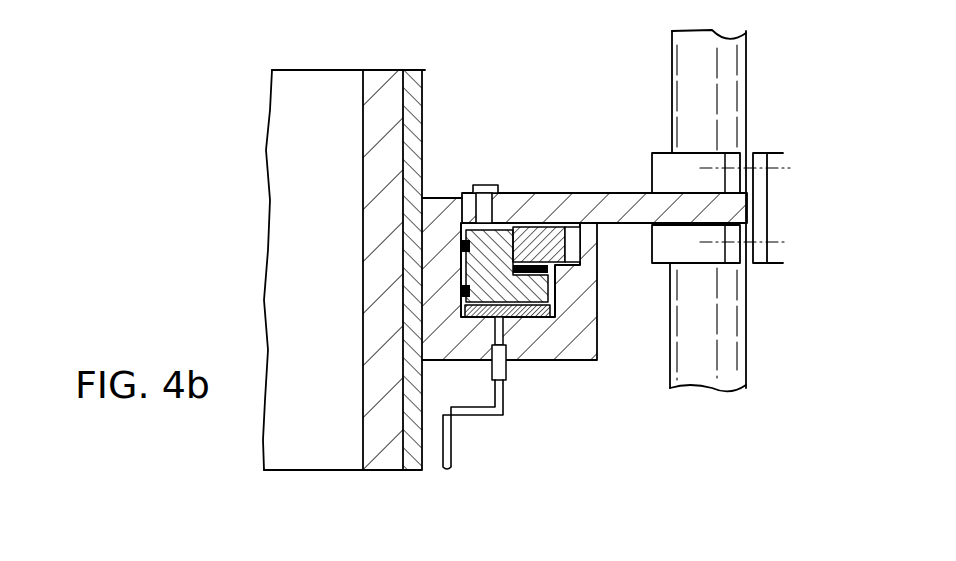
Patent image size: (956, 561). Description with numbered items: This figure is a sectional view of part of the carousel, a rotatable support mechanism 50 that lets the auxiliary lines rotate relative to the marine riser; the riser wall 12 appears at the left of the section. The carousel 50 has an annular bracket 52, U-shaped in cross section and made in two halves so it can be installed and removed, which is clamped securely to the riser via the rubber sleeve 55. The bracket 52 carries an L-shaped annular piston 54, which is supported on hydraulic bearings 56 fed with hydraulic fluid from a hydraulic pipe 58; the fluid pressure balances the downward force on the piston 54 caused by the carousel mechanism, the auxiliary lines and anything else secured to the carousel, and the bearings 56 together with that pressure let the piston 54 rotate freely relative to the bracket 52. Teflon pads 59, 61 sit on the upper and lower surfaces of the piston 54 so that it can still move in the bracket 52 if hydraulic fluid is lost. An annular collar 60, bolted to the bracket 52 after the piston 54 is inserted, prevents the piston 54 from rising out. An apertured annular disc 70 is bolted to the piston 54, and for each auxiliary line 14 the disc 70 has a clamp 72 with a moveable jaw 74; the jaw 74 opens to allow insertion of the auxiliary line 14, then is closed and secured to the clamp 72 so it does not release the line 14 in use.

The wall 12 is at (383, 453).
The auxiliary line 14 is at (725, 350).
The rotatable support mechanism 50 is at (604, 371).
The annular bracket 52 is at (595, 336).
The L-shaped annular piston 54 is at (480, 240).
The rubber sleeve 55 is at (416, 96).
The hydraulic bearings 56 is at (483, 320).
The hydraulic pipe 58 is at (478, 413).
The Teflon pad 59 is at (535, 258).
The annular collar 60 is at (597, 247).
The Teflon pad 61 is at (546, 320).
The apertured annular disc 70 is at (578, 193).
The clamp 72 is at (662, 153).
The moveable jaw 74 is at (776, 153).